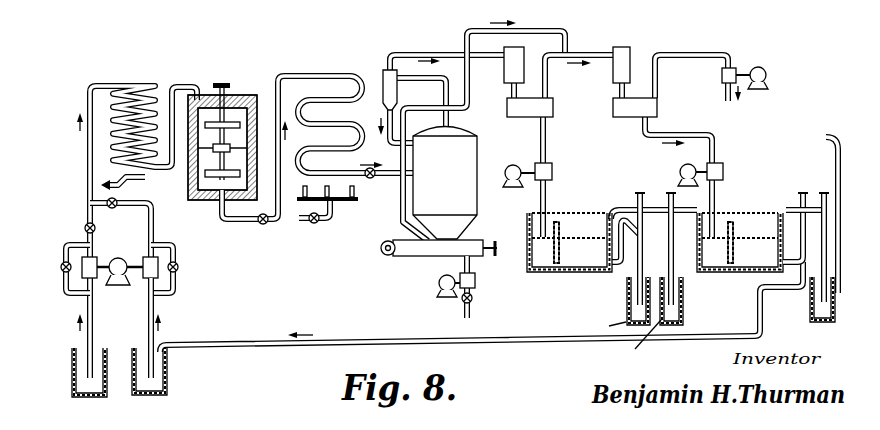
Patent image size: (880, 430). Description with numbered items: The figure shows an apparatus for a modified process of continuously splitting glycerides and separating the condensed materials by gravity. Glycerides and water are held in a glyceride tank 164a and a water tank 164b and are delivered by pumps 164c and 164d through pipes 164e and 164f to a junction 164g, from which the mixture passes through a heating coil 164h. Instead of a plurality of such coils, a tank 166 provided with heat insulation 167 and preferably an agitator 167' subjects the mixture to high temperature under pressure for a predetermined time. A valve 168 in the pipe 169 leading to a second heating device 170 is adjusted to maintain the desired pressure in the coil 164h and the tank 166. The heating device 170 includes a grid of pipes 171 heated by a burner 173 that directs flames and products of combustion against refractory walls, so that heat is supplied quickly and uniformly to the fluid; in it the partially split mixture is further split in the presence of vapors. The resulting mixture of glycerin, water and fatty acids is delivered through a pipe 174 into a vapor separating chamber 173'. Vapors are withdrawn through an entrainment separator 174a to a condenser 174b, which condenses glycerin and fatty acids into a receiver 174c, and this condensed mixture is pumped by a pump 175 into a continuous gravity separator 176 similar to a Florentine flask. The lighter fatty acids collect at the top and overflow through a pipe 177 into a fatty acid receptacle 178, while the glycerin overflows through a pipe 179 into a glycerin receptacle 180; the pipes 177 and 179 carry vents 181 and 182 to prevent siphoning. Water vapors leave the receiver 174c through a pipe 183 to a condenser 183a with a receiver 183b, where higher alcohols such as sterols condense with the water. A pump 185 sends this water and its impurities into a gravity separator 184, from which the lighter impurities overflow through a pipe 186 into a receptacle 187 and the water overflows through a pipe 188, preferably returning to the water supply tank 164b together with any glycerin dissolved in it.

The glyceride tank 164a is at (114, 340).
The water tank 164b is at (168, 375).
The pump 164c is at (98, 255).
The pump 164d is at (161, 293).
The pipe 164e is at (86, 228).
The pipe 164f is at (160, 214).
The junction 164g is at (88, 203).
The heating coil 164h is at (134, 86).
The tank 166 is at (238, 94).
The heat insulation 167 is at (234, 125).
The agitator 167' is at (215, 190).
The valve 168 is at (261, 225).
The pipe 169 is at (282, 204).
The heating device 170 is at (326, 68).
The grid of pipes 171 is at (304, 88).
The burner 173 is at (330, 216).
The vapor separating chamber 173' is at (454, 223).
The pipe 174 is at (388, 180).
The entrainment separator 174a is at (380, 78).
The condenser 174b is at (507, 70).
The receiver 174c is at (553, 107).
The pump 175 is at (553, 170).
The continuous gravity separator 176 is at (527, 270).
The pipe 177 is at (652, 208).
The fatty acid receptacle 178 is at (684, 314).
The pipe 179 is at (617, 275).
The glycerin receptacle 180 is at (626, 311).
The vent 181 is at (675, 200).
The vent 182 is at (635, 200).
The pipe 183 is at (587, 52).
The condenser 183a is at (632, 62).
The receiver 183b is at (657, 108).
The gravity separator 184 is at (702, 272).
The pump 185 is at (723, 168).
The pipe 186 is at (792, 207).
The receptacle 187 is at (815, 320).
The pipe 188 is at (781, 291).